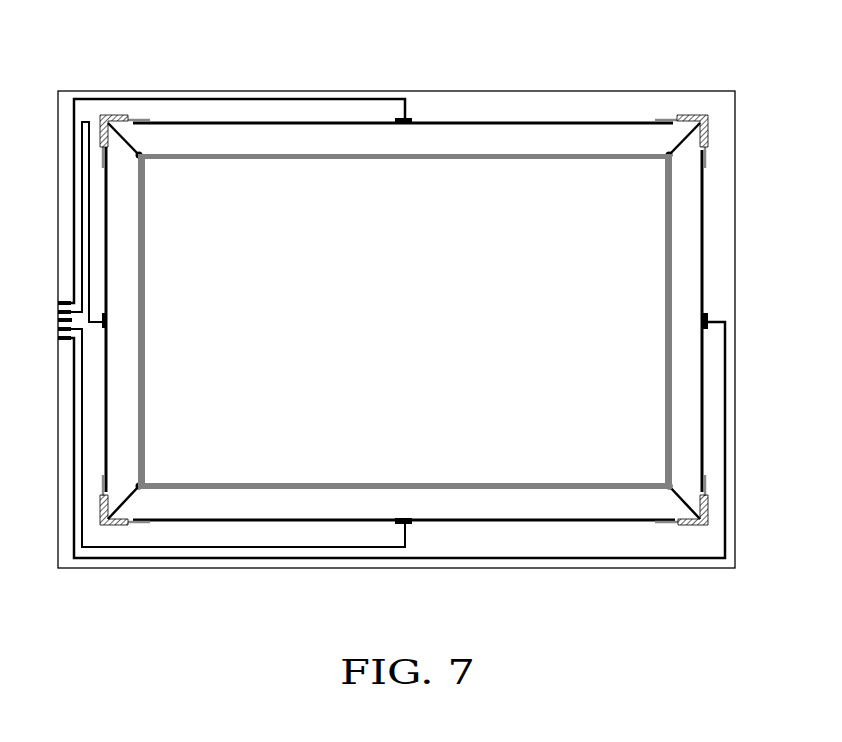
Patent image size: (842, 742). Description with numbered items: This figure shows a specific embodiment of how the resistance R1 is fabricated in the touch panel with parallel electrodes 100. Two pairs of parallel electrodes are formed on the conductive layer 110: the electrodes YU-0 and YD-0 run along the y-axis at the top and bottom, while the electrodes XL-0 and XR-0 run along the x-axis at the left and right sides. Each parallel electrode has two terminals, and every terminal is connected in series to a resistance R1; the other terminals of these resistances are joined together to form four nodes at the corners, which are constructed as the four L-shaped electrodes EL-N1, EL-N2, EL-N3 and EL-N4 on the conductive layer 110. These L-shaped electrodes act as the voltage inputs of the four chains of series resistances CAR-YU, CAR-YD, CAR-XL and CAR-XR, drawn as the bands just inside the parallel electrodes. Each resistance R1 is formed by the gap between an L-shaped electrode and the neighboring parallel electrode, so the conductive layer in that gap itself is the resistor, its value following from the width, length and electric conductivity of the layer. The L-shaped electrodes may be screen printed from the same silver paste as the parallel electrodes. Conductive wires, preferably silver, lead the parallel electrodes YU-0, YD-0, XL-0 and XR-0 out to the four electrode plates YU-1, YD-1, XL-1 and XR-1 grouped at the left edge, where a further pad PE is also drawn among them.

The touch panel with parallel electrodes 100 is at (560, 70).
The conductive layer 110 is at (717, 123).
The resistance R1 is at (150, 120).
The L-shaped electrode at node N1 EL-N1 is at (108, 114).
The L-shaped electrode at node N2 EL-N2 is at (700, 116).
The L-shaped electrode at node N3 EL-N3 is at (695, 524).
The L-shaped electrode at node N4 EL-N4 is at (106, 526).
The chain of series resistances CAR-YU is at (405, 157).
The chain of series resistances CAR-YD is at (430, 483).
The chain of series resistances CAR-XL is at (142, 287).
The chain of series resistances CAR-XR is at (668, 298).
The parallel electrode in y-axis YU-0 is at (402, 98).
The parallel electrode in y-axis YD-0 is at (415, 529).
The parallel electrode in x-axis XL-0 is at (116, 320).
The parallel electrode in x-axis XR-0 is at (717, 315).
The electrode plate YU-1 is at (214, 204).
The electrode plate XL-1 is at (63, 222).
The ground pad PE is at (50, 319).
The electrode plate XR-1 is at (214, 434).
The electrode plate YD-1 is at (374, 440).